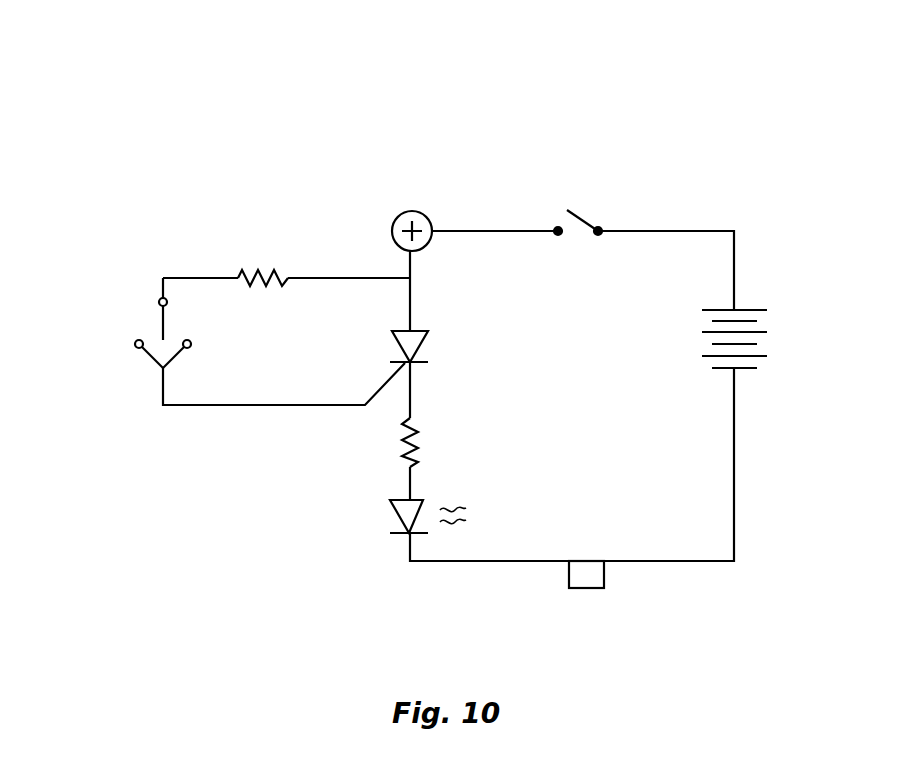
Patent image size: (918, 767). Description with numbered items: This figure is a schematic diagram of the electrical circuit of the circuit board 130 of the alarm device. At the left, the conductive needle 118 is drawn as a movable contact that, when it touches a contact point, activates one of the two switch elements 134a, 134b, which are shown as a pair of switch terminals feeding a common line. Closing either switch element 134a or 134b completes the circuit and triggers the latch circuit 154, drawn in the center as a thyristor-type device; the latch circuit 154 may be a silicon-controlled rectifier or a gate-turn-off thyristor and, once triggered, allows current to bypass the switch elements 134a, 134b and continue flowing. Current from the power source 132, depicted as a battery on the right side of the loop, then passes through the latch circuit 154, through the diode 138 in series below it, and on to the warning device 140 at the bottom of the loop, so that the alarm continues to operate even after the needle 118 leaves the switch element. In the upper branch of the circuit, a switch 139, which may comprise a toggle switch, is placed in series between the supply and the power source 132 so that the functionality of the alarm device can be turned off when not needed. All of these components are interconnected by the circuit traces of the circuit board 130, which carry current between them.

The circuit board 130 is at (400, 118).
The conductive needle 118 is at (150, 322).
The switch element 134a is at (136, 346).
The switch element 134b is at (192, 344).
The latch circuit 154 is at (423, 346).
The switch 139 is at (587, 217).
The power source 132 is at (760, 332).
The diode 138 is at (392, 515).
The warning device 140 is at (590, 589).